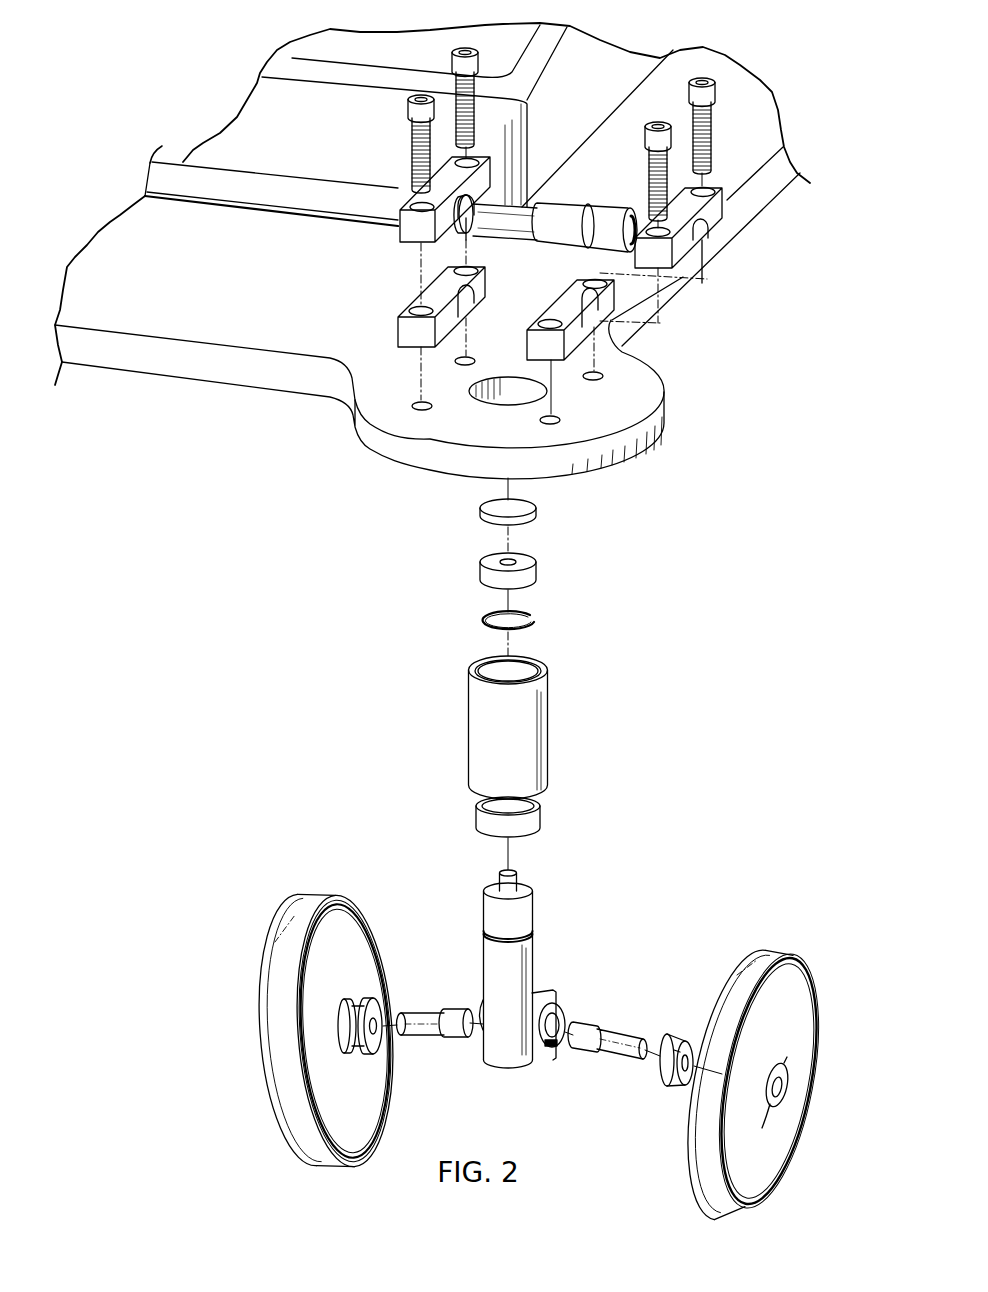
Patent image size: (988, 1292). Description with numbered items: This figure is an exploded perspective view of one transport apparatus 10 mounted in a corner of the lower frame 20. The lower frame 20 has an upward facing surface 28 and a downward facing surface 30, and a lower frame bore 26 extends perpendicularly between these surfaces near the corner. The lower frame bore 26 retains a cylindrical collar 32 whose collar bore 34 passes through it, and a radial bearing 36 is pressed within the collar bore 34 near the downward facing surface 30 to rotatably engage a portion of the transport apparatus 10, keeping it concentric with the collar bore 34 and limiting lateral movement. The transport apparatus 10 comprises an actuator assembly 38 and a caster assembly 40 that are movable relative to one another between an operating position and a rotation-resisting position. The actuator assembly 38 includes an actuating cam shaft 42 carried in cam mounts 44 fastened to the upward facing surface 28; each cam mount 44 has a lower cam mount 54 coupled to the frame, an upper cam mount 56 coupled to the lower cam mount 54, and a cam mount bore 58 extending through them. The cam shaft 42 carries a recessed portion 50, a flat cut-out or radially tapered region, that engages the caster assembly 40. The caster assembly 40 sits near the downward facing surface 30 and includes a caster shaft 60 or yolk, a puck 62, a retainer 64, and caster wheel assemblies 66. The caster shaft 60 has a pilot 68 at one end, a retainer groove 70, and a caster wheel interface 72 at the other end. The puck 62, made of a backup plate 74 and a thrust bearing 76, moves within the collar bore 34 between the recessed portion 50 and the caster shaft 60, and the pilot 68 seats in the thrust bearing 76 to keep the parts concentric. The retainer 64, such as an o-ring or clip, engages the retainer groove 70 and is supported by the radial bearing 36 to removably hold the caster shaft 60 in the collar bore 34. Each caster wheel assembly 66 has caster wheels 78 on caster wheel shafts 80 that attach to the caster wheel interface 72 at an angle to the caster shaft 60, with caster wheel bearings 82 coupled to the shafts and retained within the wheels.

The transport apparatus 10 is at (461, 610).
The lower frame 20 is at (347, 347).
The lower frame bore 26 is at (503, 390).
The upward facing surface 28 is at (160, 327).
The downward facing surface 30 is at (198, 377).
The collar 32 is at (558, 719).
The collar bore 34 is at (527, 667).
The radial bearing 36 is at (535, 820).
The actuator assembly 38 is at (518, 445).
The caster assembly 40 is at (558, 1017).
The cam shaft 42 is at (288, 180).
The cam mounts 44 is at (435, 668).
The recessed portion 50 is at (523, 222).
The lower cam mount 54 is at (710, 91).
The upper cam mount 56 is at (408, 333).
The cam mount bore 58 is at (400, 232).
The caster shaft 60 is at (465, 290).
The puck 62 is at (500, 553).
The retainer 64 is at (482, 620).
The caster wheel assembly 66 is at (603, 1005).
The pilot 68 is at (517, 877).
The retainer groove 70 is at (483, 935).
The caster wheel interface 72 is at (547, 1047).
The backup plate 74 is at (480, 517).
The thrust bearing 76 is at (480, 570).
The caster wheel 78 is at (787, 960).
The caster wheel shaft 80 is at (608, 1057).
The caster wheel bearing 82 is at (672, 1087).